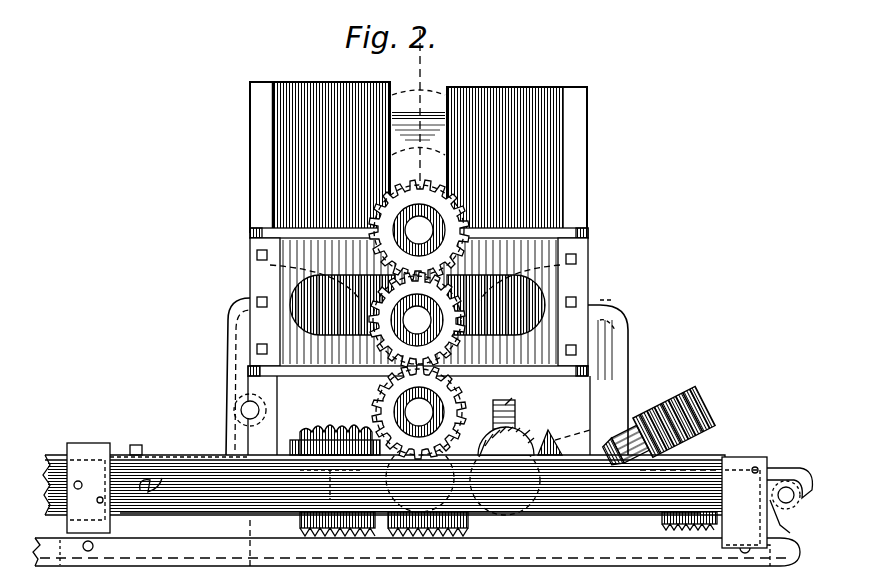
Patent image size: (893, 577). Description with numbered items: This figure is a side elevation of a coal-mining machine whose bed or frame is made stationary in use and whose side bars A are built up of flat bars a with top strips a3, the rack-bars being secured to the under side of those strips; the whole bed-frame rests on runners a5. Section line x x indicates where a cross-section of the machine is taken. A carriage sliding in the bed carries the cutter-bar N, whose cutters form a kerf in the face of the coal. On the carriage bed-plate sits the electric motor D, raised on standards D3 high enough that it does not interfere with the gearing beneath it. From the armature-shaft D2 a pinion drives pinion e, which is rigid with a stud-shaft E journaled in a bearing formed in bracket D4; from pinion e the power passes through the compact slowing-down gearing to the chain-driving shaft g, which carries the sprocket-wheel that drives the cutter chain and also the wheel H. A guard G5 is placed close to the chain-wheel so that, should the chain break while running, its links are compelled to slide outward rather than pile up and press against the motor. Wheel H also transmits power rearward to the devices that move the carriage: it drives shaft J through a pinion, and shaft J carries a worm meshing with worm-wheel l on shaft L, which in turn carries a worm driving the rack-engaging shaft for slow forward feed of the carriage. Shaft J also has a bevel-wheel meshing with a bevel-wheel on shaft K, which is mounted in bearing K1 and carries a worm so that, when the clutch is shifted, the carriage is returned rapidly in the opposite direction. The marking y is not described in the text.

The section line x x is at (417, 96).
The electric motor D is at (517, 149).
The armature-shaft D2 is at (620, 412).
The standards D3 is at (241, 376).
The bracket D4 is at (585, 258).
The shaft L is at (453, 354).
The worm-wheel l is at (485, 440).
The pinion e is at (425, 289).
The guard G5 is at (345, 376).
The shaft K is at (609, 476).
The bearing K1 is at (730, 410).
The flat bars a is at (145, 486).
The top strips a3 is at (160, 455).
The runners a5 is at (410, 536).
The side bars A is at (384, 485).
The stud-shaft E is at (330, 483).
The chain-driving shaft g is at (420, 478).
The shaft J is at (505, 480).
The cutter-bar N is at (680, 480).
The wheel H is at (416, 551).
The axis line y is at (219, 548).